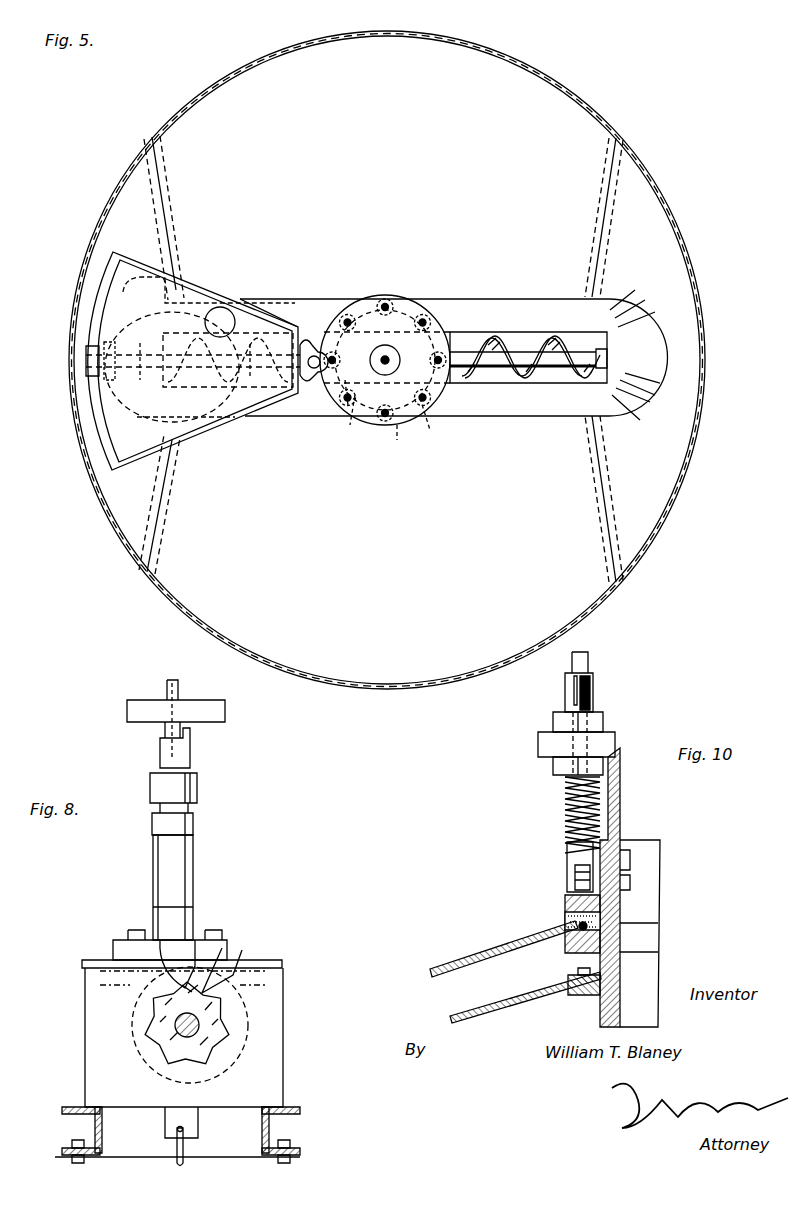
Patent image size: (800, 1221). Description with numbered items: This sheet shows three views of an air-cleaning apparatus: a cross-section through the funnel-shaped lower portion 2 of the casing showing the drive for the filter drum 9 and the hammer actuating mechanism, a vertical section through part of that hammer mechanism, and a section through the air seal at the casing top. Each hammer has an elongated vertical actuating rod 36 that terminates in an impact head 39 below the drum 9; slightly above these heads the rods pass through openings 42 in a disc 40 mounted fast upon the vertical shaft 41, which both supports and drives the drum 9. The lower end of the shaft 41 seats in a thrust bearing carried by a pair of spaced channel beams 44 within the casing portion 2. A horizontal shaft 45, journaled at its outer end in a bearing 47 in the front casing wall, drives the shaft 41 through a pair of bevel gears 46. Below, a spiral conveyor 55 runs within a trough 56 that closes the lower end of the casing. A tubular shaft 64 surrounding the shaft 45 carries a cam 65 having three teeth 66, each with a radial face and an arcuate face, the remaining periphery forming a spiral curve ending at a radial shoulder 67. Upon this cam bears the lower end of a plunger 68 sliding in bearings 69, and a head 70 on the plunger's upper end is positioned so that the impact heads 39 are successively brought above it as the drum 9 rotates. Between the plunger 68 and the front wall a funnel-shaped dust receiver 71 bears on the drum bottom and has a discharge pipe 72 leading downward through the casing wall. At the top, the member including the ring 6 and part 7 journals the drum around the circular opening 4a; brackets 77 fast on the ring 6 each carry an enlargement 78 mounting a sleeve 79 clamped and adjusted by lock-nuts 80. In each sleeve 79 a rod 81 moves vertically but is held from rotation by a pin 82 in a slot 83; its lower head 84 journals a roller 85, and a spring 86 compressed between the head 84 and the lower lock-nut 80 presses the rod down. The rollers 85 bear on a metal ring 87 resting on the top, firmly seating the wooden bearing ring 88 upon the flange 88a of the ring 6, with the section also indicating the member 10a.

In FIG. 5, the lower portion of casing 2 is at (386, 684).
In FIG. 5, the drum 9 is at (375, 359).
In FIG. 5, the actuating rod 36 is at (348, 320).
In FIG. 8, the actuating rod 36 is at (180, 685).
In FIG. 5, the impact head 39 is at (400, 445).
In FIG. 8, the impact head 39 is at (190, 750).
In FIG. 5, the disc 40 is at (410, 310).
In FIG. 8, the disc 40 is at (226, 713).
In FIG. 5, the vertical shaft 41 is at (383, 366).
In FIG. 10, the vertical shaft 41 is at (503, 948).
In FIG. 5, the openings 42 is at (426, 405).
In FIG. 5, the bevel gears 46 is at (345, 420).
In FIG. 8, the bevel gears 46 is at (240, 1027).
In FIG. 5, the bearing 47 is at (113, 436).
In FIG. 5, the spiral conveyor 55 is at (462, 360).
In FIG. 5, the trough 56 is at (480, 338).
In FIG. 5, the tubular shaft 64 is at (240, 400).
In FIG. 8, the tubular shaft 64 is at (174, 1022).
In FIG. 8, the cam 65 is at (212, 1046).
In FIG. 8, the teeth 66 is at (195, 990).
In FIG. 8, the radial shoulder 67 is at (212, 940).
In FIG. 8, the plunger 68 is at (175, 868).
In FIG. 8, the bearings 69 is at (195, 820).
In FIG. 5, the head 70 is at (300, 392).
In FIG. 8, the head 70 is at (198, 784).
In FIG. 5, the dust receiver 71 is at (258, 313).
In FIG. 5, the discharge pipe 72 is at (123, 290).
In FIG. 8, the channel beams 44 is at (265, 1130).
In FIG. 8, the horizontal shaft 45 is at (180, 1030).
In FIG. 10, the ring 6 is at (600, 1016).
In FIG. 10, the journal member part 7 is at (650, 937).
In FIG. 10, the brackets 77 is at (620, 779).
In FIG. 10, the enlargement 78 is at (538, 746).
In FIG. 10, the sleeve 79 is at (600, 702).
In FIG. 10, the lock-nuts 80 is at (553, 718).
In FIG. 10, the rod 81 is at (590, 657).
In FIG. 10, the pin 82 is at (597, 683).
In FIG. 10, the slot 83 is at (573, 683).
In FIG. 10, the head 84 is at (567, 850).
In FIG. 10, the roller 85 is at (580, 884).
In FIG. 10, the spring 86 is at (568, 818).
In FIG. 10, the metal ring 87 is at (566, 907).
In FIG. 10, the bearing ring 88 is at (576, 925).
In FIG. 10, the flange 88a is at (568, 938).
In FIG. 10, the circular opening 4a is at (612, 916).
In FIG. 10, the lower rod 10a is at (505, 1000).